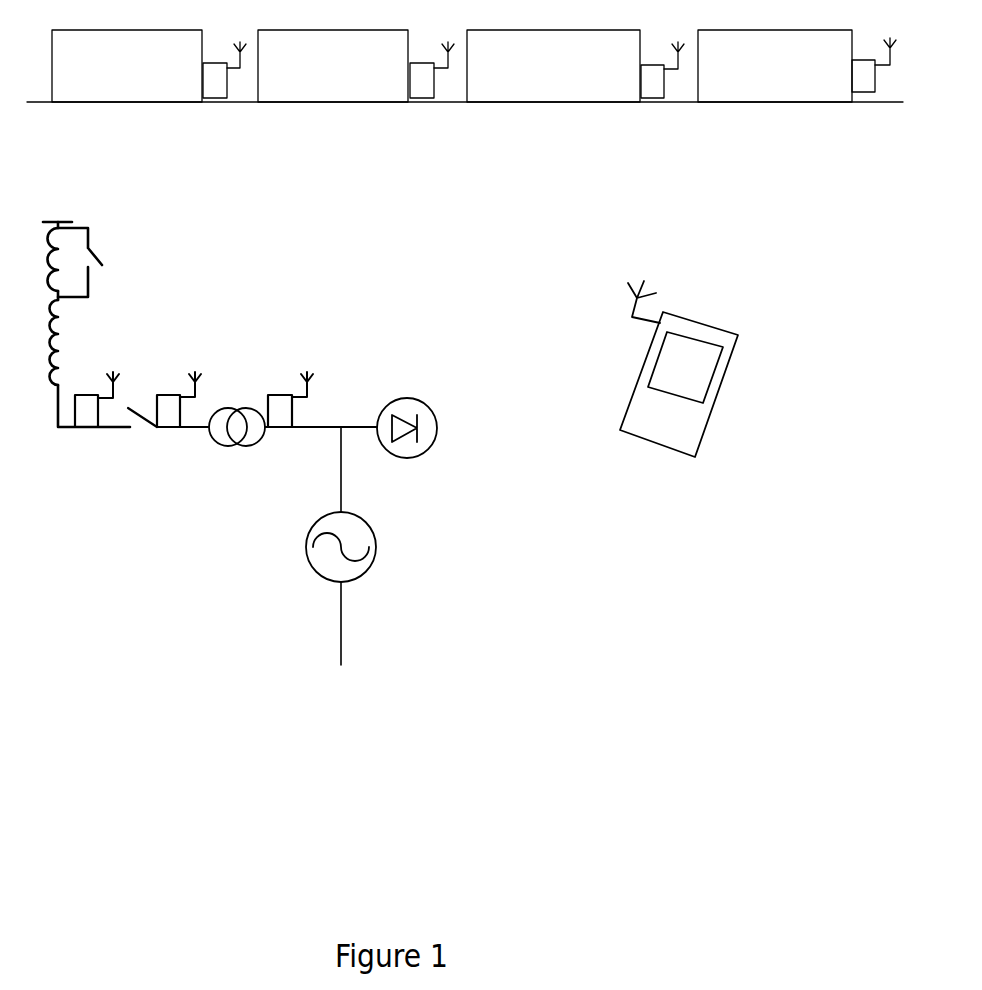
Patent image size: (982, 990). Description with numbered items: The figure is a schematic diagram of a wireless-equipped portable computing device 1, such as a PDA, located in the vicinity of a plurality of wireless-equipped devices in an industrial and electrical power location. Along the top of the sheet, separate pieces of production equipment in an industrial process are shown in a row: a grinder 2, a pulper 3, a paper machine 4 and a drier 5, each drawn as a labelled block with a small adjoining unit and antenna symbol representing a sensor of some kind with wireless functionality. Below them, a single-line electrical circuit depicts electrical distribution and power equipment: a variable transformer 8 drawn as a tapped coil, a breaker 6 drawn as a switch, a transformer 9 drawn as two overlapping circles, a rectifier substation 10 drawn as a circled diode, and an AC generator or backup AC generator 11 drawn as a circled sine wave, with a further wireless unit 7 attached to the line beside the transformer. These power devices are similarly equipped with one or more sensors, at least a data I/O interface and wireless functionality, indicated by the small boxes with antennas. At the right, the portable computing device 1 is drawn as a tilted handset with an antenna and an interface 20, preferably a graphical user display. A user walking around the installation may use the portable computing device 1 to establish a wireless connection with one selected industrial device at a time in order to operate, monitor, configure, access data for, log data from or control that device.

The portable computing device 1 is at (623, 397).
The grinder 2 is at (161, 90).
The pulper 3 is at (392, 84).
The paper machine 4 is at (615, 90).
The drier 5 is at (841, 80).
The breaker 6 is at (157, 432).
The transceiver unit 7 is at (267, 398).
The variable transformer 8 is at (58, 437).
The transformer 9 is at (242, 460).
The rectifier substation 10 is at (407, 442).
The AC generator 11 is at (343, 572).
The interface 20 is at (697, 375).